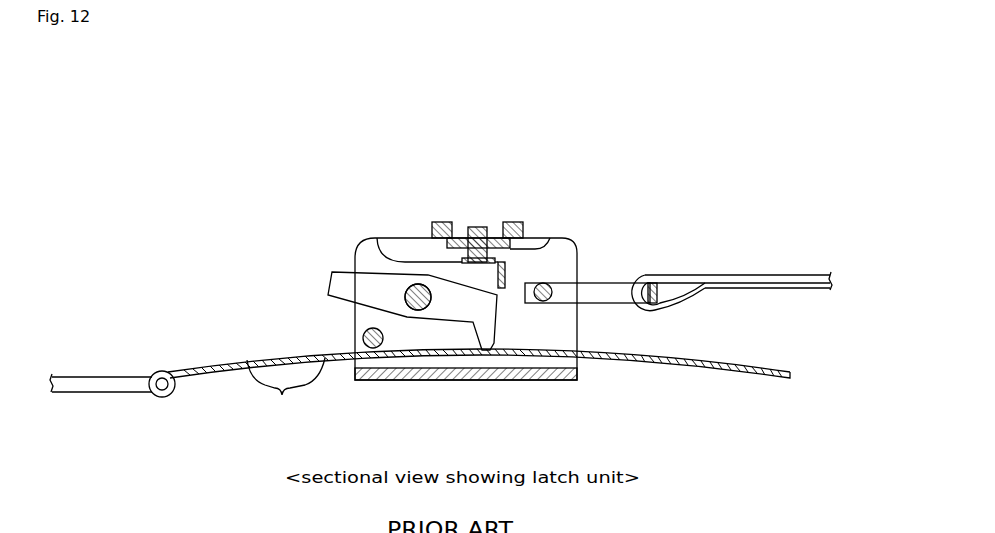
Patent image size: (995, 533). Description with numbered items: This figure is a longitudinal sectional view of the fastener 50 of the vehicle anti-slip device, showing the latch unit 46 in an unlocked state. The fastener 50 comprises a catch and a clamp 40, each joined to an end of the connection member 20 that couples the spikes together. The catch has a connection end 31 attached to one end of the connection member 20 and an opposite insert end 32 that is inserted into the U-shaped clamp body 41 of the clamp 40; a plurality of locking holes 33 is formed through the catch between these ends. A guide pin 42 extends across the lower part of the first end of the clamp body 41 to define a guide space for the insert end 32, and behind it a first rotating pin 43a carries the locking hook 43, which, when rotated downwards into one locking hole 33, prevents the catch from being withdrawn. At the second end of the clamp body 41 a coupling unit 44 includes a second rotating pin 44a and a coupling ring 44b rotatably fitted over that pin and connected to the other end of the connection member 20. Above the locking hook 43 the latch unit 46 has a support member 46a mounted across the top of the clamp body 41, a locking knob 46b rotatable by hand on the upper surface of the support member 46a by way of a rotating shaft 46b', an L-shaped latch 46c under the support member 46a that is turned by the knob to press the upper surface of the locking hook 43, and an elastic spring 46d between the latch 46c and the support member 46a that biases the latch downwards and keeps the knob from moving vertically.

The connection member 20 is at (122, 378).
The connection end 31 is at (177, 393).
The insert end 32 is at (748, 364).
The locking holes 33 is at (286, 388).
The clamp 40 is at (340, 240).
The clamp body 41 is at (580, 337).
The guide pin 42 is at (362, 336).
The locking hook 43 is at (345, 276).
The first rotating pin 43a is at (420, 310).
The coupling unit 44 is at (655, 210).
The second rotating pin 44a is at (545, 283).
The coupling ring 44b is at (610, 283).
The latch unit 46 is at (550, 150).
The support member 46a is at (447, 247).
The locking knob 46b is at (448, 213).
The rotating shaft 46b' is at (470, 213).
The latch 46c is at (373, 237).
The elastic spring 46d is at (541, 238).
The fastener 50 is at (700, 174).